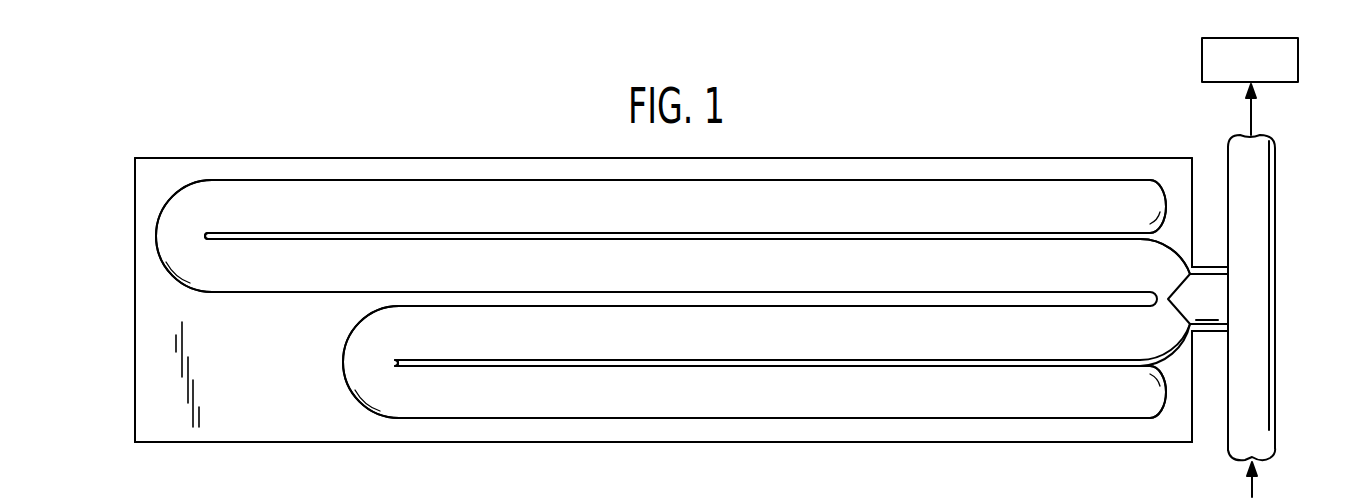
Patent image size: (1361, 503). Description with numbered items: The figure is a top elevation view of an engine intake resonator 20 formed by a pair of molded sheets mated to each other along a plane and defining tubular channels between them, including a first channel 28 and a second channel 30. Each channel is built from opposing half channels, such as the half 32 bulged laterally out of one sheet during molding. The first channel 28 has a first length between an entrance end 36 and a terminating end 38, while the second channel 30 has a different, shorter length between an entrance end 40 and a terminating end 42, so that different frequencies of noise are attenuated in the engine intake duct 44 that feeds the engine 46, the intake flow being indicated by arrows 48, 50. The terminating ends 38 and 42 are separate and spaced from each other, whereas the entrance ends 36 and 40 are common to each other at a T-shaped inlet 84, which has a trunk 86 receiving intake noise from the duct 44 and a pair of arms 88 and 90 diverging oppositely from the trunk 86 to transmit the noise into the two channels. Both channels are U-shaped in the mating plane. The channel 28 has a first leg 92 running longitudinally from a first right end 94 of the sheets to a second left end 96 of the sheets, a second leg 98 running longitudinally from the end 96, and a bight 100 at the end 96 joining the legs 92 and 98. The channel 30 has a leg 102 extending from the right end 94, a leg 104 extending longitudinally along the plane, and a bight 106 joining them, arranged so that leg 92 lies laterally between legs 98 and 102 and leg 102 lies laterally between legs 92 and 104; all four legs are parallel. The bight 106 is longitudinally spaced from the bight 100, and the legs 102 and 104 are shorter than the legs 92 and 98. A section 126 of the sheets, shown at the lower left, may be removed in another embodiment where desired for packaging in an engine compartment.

The engine intake resonator 20 is at (537, 140).
The first channel 28 is at (990, 282).
The second channel 30 is at (990, 348).
The half of channel 32 is at (816, 250).
The entrance end 36 is at (1165, 250).
The terminating end 38 is at (1150, 192).
The entrance end 40 is at (1170, 345).
The terminating end 42 is at (1138, 405).
The engine intake duct 44 is at (1277, 368).
The engine 46 is at (1202, 58).
The arrow 48 is at (1254, 488).
The arrow 50 is at (1252, 114).
The T-shaped inlet 84 is at (1207, 296).
The trunk 86 is at (1228, 298).
The arm 88 is at (1185, 262).
The arm 90 is at (1194, 344).
The first leg 92 is at (453, 250).
The first right end 94 is at (1196, 167).
The second left end 96 is at (133, 299).
The second leg 98 is at (374, 187).
The bight 100 is at (182, 198).
The leg 102 is at (688, 347).
The leg 104 is at (595, 410).
The bight 106 is at (370, 377).
The section 126 is at (230, 410).